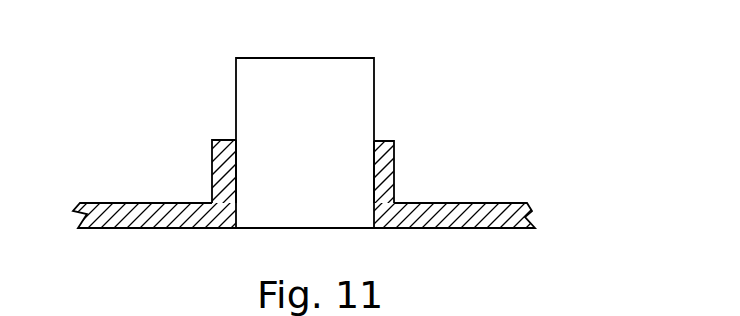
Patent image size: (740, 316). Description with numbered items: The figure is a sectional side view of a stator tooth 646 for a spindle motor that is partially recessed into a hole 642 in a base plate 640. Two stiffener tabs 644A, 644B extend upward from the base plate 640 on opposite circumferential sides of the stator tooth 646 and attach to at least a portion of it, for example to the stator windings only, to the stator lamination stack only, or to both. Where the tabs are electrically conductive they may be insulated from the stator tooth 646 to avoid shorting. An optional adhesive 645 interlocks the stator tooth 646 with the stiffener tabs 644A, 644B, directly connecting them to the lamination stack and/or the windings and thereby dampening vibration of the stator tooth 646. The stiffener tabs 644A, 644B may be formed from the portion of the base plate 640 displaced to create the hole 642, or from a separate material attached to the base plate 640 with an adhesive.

The base plate 640 is at (465, 228).
The hole 642 is at (237, 227).
The stiffener tab 644A is at (213, 183).
The stiffener tab 644B is at (385, 177).
The adhesive 645 is at (237, 192).
The stator tooth 646 is at (330, 117).